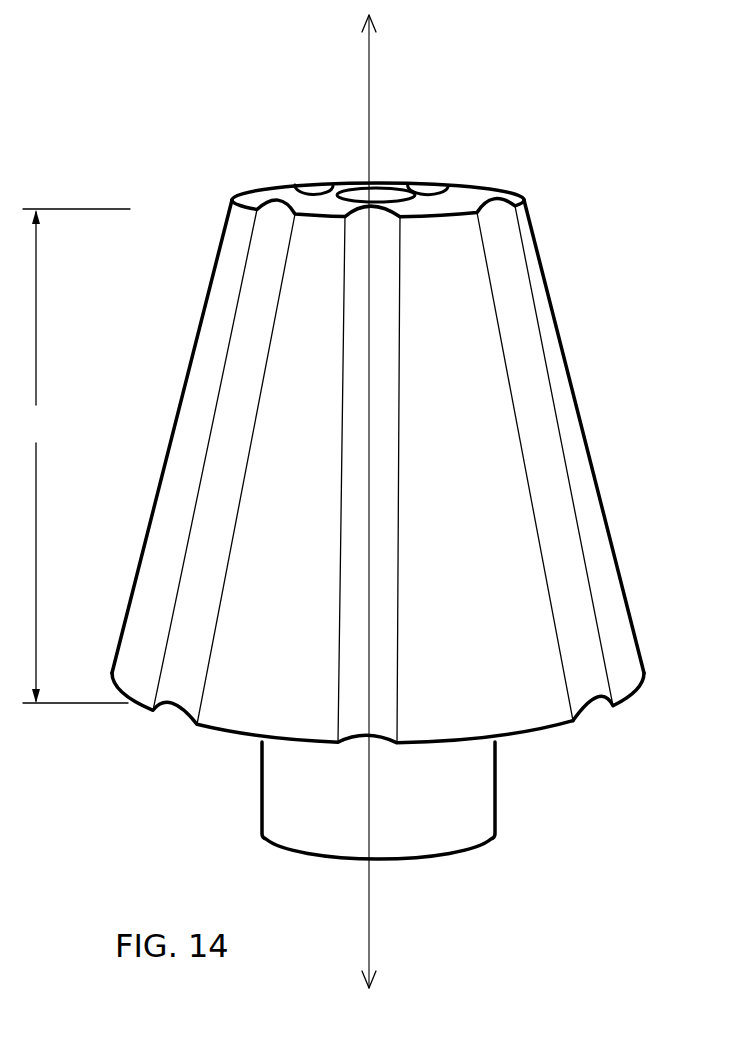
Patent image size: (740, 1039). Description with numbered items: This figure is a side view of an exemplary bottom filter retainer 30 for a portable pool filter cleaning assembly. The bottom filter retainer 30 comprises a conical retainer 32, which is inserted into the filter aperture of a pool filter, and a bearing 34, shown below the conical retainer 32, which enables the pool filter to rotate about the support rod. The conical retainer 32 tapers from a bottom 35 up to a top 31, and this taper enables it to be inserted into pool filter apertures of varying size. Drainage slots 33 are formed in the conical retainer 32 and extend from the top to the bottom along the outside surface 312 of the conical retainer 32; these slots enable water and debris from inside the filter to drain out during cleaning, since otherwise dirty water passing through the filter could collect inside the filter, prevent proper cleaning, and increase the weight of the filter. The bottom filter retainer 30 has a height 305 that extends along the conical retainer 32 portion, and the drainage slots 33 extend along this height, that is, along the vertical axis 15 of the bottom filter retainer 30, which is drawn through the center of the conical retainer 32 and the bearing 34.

The vertical axis 15 is at (370, 108).
The bottom filter retainer 30 is at (550, 343).
The top 31 is at (498, 181).
The conical retainer 32 is at (222, 161).
The drainage slots 33 is at (532, 427).
The bearing 34 is at (480, 802).
The bottom 35 is at (618, 703).
The height 305 is at (66, 456).
The outside surface 312 is at (538, 303).